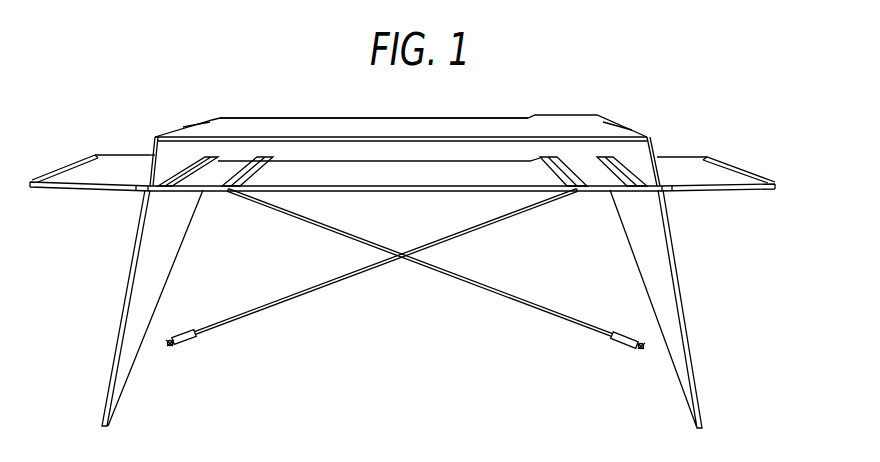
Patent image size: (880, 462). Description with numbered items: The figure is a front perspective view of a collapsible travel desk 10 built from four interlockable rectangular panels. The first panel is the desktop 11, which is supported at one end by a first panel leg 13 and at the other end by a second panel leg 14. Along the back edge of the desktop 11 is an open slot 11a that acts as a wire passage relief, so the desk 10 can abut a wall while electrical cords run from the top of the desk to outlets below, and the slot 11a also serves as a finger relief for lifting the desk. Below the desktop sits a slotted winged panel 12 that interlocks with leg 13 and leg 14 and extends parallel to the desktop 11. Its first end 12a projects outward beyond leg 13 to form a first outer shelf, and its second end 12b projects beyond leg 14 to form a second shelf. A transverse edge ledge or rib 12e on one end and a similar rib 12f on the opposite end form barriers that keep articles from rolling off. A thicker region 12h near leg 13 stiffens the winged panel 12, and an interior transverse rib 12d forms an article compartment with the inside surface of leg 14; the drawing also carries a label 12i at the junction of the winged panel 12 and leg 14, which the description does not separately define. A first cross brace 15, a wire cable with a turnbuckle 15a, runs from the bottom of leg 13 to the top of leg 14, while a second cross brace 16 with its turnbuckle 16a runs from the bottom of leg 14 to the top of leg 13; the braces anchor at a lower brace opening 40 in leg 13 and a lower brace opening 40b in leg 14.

The collapsible travel desk 10 is at (579, 91).
The desktop 11 is at (253, 122).
The open slot 11a is at (308, 120).
The winged panel 12 is at (453, 173).
The first end of the winged panel 12a is at (683, 167).
The second end of the winged panel 12b is at (128, 170).
The first interior transverse rib 12d is at (203, 192).
The transverse top surface edge ledge or rib 12e is at (730, 157).
The transverse top surface edge ledge or rib 12f is at (87, 160).
The second thicker region 12h is at (662, 193).
The left hinge 12i is at (133, 188).
The first panel leg 13 is at (683, 312).
The second panel leg 14 is at (128, 292).
The first cross brace 15 is at (503, 297).
The turnbuckle 15a is at (620, 340).
The second cross brace 16 is at (328, 287).
The turnbuckle 16a is at (192, 342).
The lower brace opening 40 is at (170, 350).
The lower brace opening 40b is at (647, 348).